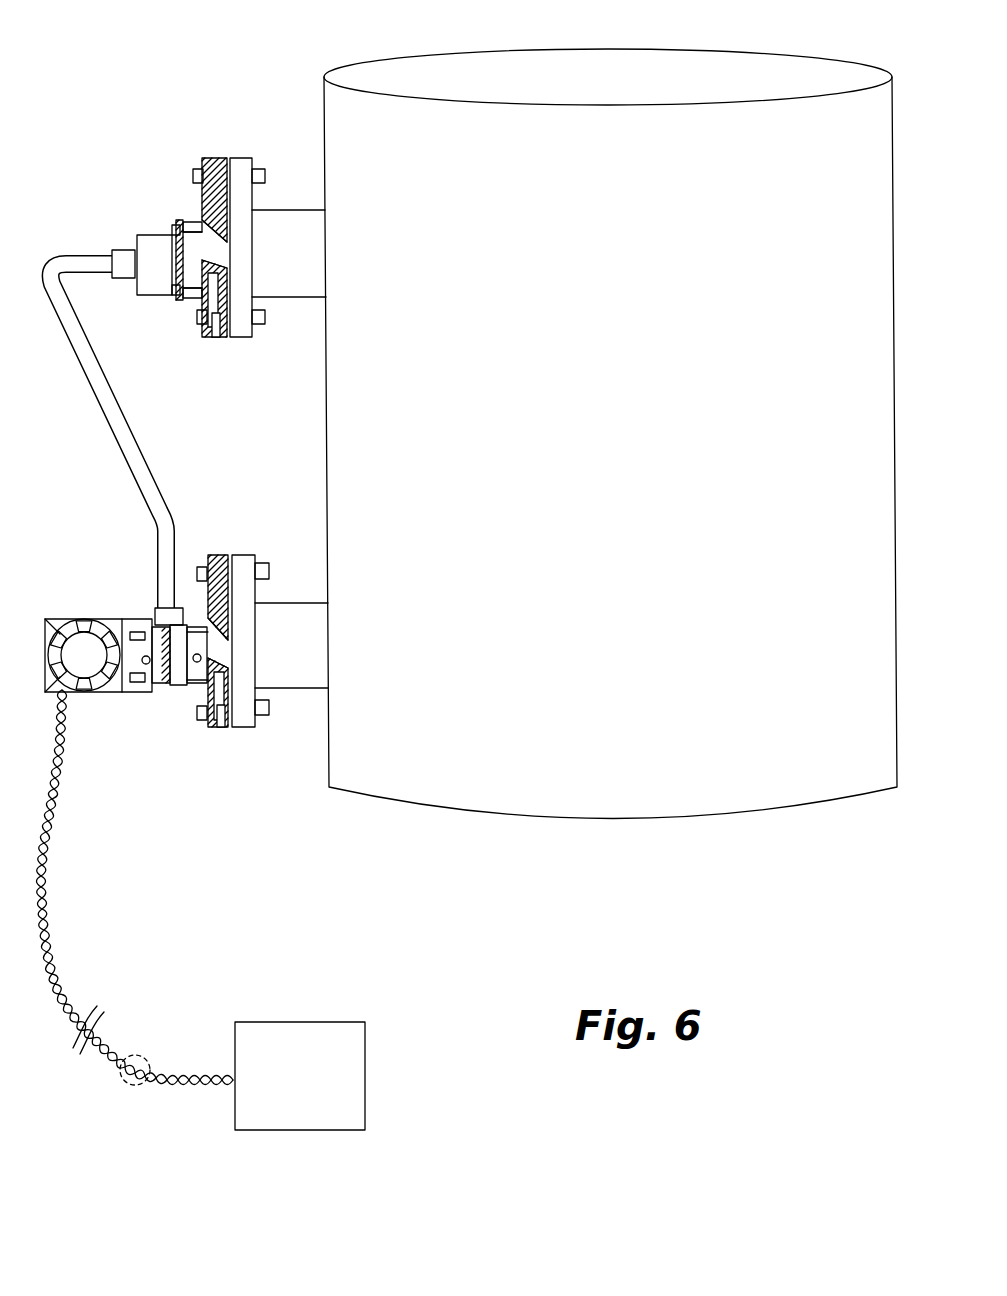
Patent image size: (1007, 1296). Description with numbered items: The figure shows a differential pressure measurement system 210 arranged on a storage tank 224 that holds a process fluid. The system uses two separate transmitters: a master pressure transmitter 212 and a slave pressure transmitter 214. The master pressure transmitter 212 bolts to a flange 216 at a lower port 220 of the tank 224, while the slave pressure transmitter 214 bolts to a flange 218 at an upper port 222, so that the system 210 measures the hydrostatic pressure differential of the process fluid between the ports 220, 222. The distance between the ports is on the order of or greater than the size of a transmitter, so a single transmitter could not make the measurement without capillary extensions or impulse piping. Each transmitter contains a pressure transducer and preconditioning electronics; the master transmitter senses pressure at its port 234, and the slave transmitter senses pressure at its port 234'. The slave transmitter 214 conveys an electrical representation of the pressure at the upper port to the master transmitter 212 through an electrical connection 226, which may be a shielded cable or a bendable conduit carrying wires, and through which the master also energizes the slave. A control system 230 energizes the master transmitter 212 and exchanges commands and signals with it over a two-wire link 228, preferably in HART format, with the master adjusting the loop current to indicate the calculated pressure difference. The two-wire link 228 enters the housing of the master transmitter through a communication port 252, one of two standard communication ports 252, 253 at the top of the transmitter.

The differential pressure measurement system 210 is at (104, 93).
The master pressure transmitter 212 is at (143, 700).
The slave pressure transmitter 214 is at (184, 320).
The flange 216 is at (243, 713).
The flange 218 is at (238, 168).
The port 220 is at (297, 652).
The port 222 is at (292, 212).
The storage tank 224 is at (613, 351).
The electrical connection 226 is at (116, 440).
The two-wire link 228 is at (147, 1055).
The control system 230 is at (312, 1083).
The port 234 is at (258, 608).
The port 234' is at (256, 288).
The communication port 252 is at (44, 702).
The communication port 253 is at (58, 612).